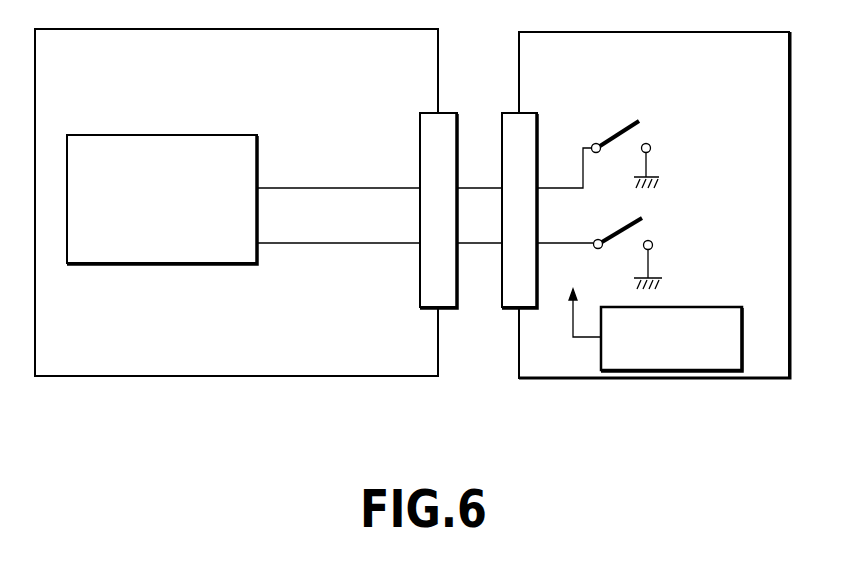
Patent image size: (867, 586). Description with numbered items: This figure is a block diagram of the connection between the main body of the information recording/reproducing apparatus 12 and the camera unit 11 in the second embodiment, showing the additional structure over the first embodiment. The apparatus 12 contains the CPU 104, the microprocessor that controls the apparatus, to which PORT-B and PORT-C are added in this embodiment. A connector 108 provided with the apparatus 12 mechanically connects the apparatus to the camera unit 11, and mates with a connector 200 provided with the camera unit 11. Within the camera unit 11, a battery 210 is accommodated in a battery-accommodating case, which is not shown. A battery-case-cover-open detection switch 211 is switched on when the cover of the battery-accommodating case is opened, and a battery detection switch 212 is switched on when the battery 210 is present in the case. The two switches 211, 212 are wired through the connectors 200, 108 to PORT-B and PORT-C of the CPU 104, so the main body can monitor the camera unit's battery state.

The camera unit 11 is at (658, 388).
The apparatus 12 is at (196, 383).
The CPU 104 is at (193, 135).
The connector 108 is at (420, 290).
The connector 200 is at (537, 113).
The battery 210 is at (730, 307).
The battery-case-cover-open detection switch 211 is at (642, 134).
The battery detection switch 212 is at (645, 226).